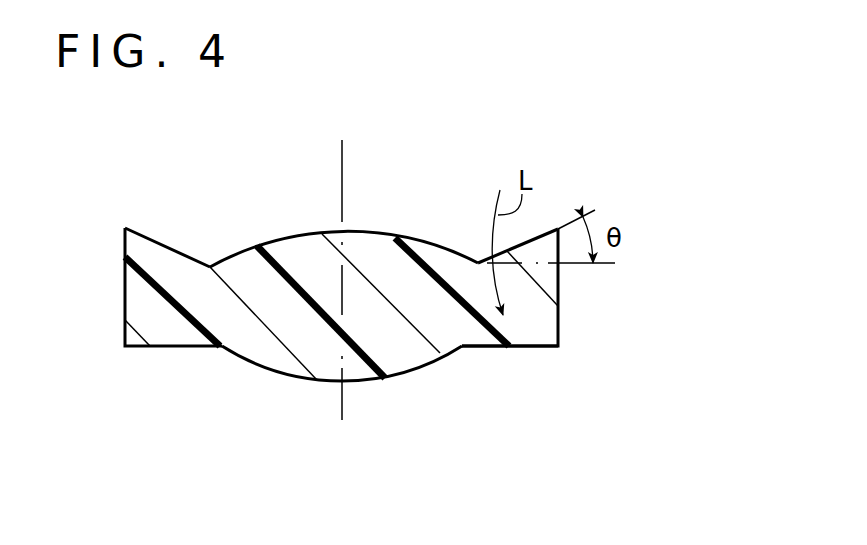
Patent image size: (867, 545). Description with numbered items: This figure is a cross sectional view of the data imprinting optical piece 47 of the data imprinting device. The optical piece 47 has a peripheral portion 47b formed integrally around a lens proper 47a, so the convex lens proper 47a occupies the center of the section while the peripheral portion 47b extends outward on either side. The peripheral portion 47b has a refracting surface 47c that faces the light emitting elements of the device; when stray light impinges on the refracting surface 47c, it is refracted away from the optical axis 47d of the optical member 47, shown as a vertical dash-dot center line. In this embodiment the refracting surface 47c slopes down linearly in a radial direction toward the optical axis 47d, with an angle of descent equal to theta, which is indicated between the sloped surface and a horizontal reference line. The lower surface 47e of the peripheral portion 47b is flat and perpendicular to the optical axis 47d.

The data imprinting optical piece 47 is at (248, 373).
The lens proper 47a is at (303, 248).
The peripheral portion 47b is at (522, 328).
The refracting surface 47c is at (537, 234).
The optical axis 47d is at (343, 199).
The lower surface 47e is at (545, 347).